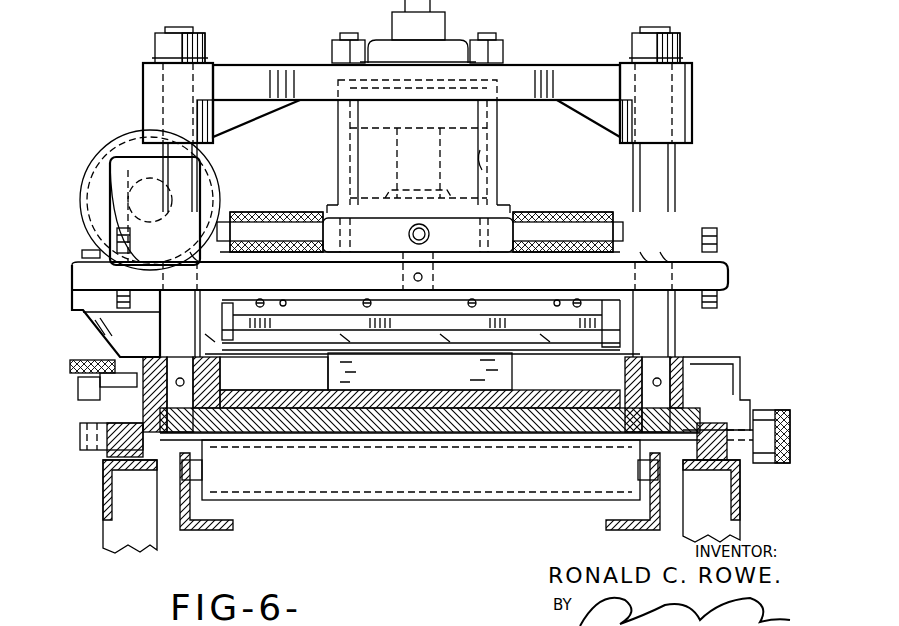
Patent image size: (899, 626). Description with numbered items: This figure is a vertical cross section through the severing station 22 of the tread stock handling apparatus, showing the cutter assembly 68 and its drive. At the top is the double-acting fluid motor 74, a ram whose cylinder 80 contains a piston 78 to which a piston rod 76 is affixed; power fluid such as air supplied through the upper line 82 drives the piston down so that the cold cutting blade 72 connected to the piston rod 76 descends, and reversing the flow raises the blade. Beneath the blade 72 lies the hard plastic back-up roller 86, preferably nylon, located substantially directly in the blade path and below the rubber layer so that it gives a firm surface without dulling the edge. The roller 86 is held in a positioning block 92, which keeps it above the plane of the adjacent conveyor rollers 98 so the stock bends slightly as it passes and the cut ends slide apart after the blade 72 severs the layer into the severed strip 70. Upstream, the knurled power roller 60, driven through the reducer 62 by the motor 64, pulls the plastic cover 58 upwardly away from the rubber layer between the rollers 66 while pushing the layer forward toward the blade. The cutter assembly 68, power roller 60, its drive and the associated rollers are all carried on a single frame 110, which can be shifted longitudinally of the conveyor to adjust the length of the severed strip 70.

The severing station 22 is at (70, 252).
The cover 58 is at (330, 372).
The knurled power roller 60 is at (296, 190).
The reducer 62 is at (108, 176).
The motor 64 is at (212, 180).
The rollers 66 is at (598, 352).
The cutter assembly 68 is at (733, 273).
The severed strip 70 is at (405, 380).
The cold cutting blade 72 is at (290, 344).
The double-acting fluid motor 74 is at (512, 60).
The piston rod 76 is at (397, 162).
The piston 78 is at (478, 136).
The cylinder 80 is at (488, 160).
The upper line 82 is at (432, 3).
The back-up roller 86 is at (545, 390).
The positioning block 92 is at (448, 433).
The conveyor rollers 98 is at (300, 497).
The frame 110 is at (745, 373).